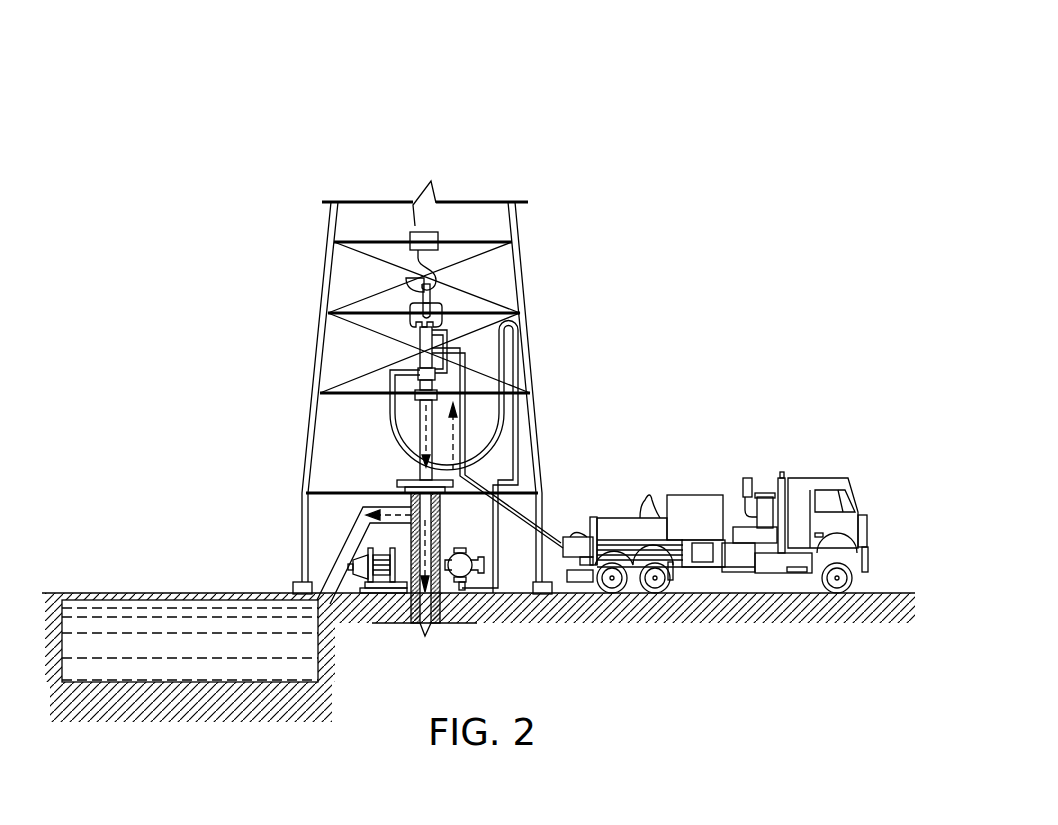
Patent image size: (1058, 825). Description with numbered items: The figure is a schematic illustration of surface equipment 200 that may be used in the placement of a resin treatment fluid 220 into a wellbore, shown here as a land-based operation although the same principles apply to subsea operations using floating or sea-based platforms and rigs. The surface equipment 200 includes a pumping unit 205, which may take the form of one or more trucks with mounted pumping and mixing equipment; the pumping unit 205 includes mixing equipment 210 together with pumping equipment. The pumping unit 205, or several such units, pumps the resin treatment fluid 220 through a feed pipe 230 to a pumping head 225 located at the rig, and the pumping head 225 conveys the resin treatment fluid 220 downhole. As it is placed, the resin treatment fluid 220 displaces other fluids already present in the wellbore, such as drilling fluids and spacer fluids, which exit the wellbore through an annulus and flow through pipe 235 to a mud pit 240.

The surface equipment 200 is at (725, 248).
The pumping unit 205 is at (785, 575).
The mixing equipment 210 is at (707, 556).
The resin treatment fluid 220 is at (424, 430).
The pumping head 225 is at (452, 307).
The feed pipe 230 is at (530, 520).
The pipe 235 is at (345, 604).
The mud pit 240 is at (140, 683).